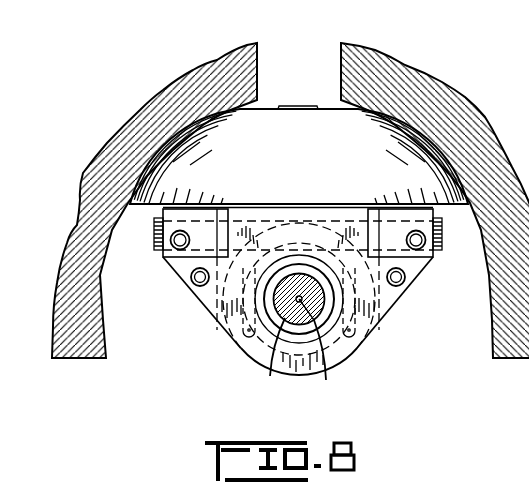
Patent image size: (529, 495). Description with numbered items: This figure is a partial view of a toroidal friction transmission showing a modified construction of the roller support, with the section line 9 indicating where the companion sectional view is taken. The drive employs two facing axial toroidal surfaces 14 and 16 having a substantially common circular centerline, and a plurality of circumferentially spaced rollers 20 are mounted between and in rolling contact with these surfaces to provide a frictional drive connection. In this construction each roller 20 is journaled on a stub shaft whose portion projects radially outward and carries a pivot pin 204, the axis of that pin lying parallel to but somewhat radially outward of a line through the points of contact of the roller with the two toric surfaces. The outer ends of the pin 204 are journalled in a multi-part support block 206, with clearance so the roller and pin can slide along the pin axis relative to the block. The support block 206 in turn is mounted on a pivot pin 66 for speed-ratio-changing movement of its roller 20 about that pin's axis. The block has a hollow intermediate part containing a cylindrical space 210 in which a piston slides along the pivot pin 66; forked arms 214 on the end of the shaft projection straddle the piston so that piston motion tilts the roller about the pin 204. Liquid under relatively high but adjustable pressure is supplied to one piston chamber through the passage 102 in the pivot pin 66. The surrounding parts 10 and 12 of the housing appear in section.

The section line 9- 9 is at (299, 72).
The housing 10 is at (446, 88).
The housing wall 12 is at (143, 125).
The axial toroidal surface 14 is at (418, 146).
The axial toroidal surface 16 is at (104, 262).
The roller 20 is at (320, 174).
The pivot pin 66 is at (270, 370).
The passage 102 is at (325, 372).
The pivot pin 204 is at (444, 243).
The support block 206 is at (414, 268).
The cylindrical space 210 is at (343, 361).
The forked arms 214 is at (377, 330).